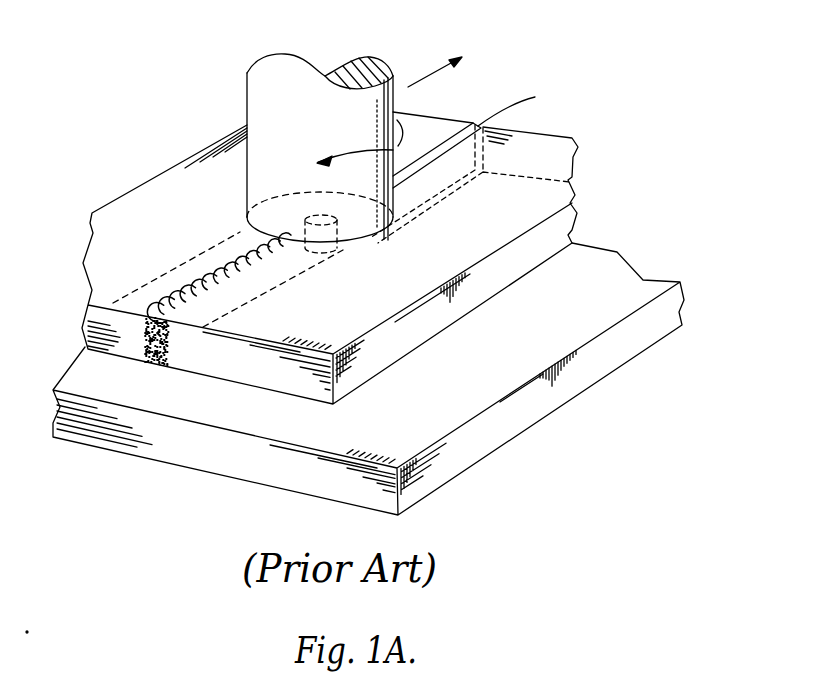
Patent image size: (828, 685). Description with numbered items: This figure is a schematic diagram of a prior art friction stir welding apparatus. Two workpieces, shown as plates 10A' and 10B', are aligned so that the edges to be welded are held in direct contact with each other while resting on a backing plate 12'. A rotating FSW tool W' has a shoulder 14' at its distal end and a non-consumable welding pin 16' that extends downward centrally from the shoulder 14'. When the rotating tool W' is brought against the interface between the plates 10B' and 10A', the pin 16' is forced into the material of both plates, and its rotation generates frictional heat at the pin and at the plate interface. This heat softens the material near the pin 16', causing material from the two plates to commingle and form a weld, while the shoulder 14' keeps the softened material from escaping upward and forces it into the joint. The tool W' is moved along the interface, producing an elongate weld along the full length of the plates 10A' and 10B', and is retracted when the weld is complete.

The workpiece plate 10A' is at (385, 258).
The workpiece plate 10B' is at (150, 245).
The backing plate 12' is at (368, 379).
The shoulder 14' is at (391, 148).
The welding pin 16' is at (296, 290).
The FSW tool W' is at (468, 46).